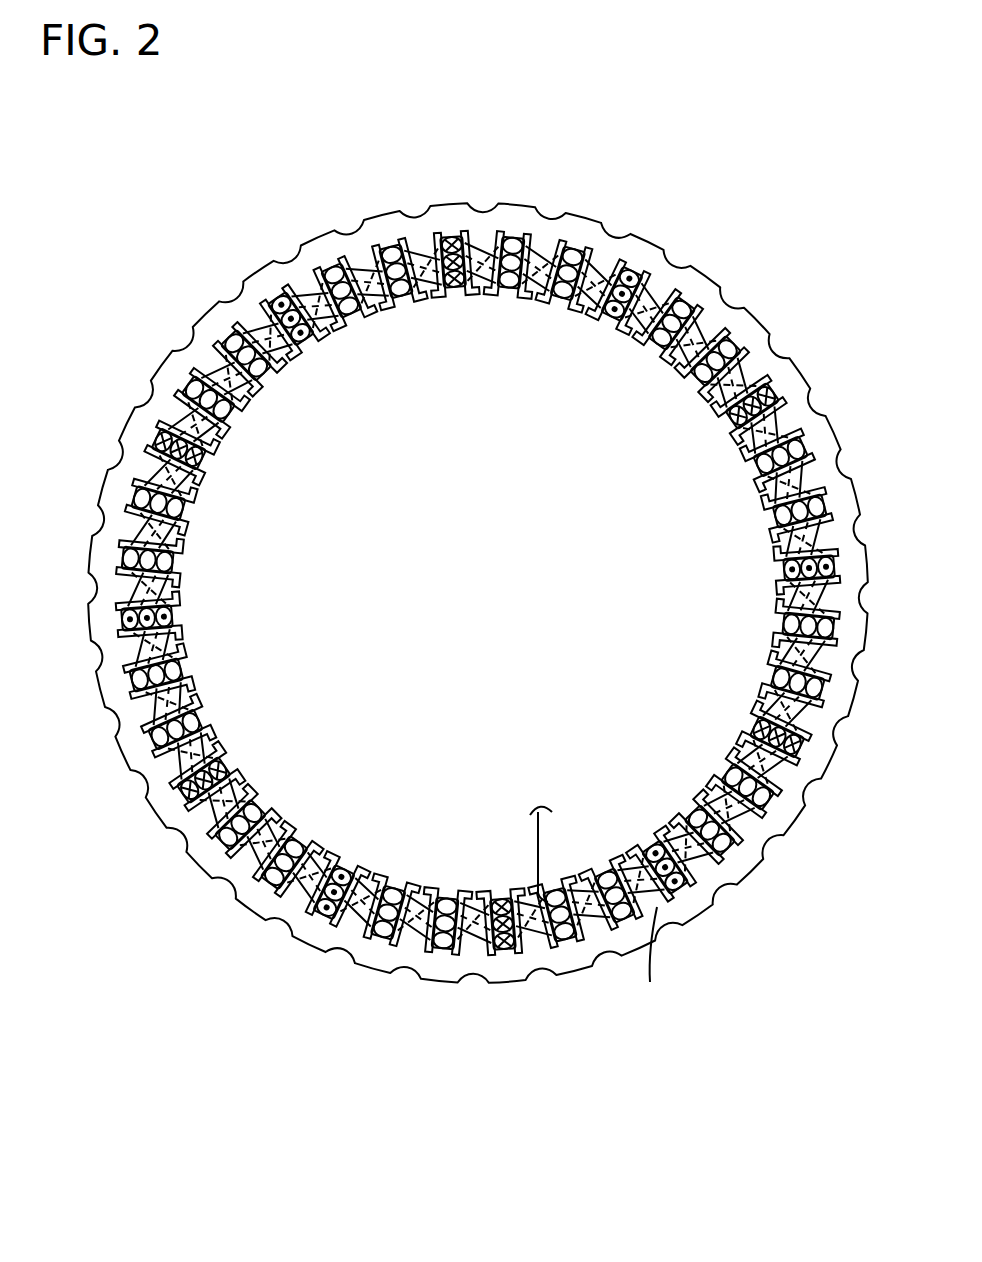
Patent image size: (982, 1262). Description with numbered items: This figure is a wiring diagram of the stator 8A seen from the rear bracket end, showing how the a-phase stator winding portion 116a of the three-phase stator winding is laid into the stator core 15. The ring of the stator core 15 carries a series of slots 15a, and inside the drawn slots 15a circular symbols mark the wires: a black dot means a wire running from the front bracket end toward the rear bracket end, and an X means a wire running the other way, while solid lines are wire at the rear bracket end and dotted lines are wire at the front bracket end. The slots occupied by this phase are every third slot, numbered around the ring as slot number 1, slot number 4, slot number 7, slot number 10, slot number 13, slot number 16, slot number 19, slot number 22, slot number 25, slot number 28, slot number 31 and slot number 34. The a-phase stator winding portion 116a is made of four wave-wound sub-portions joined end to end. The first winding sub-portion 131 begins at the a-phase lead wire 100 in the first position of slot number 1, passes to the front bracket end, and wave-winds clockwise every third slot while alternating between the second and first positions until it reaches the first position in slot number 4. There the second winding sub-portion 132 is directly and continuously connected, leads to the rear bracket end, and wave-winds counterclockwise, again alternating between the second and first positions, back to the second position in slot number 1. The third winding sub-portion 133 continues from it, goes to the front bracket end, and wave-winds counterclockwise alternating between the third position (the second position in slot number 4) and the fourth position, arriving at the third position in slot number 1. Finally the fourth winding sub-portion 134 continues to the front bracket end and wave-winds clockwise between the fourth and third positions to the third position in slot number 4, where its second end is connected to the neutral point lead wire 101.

The stator 8A is at (211, 186).
The stator core 15 is at (652, 252).
The slots 15a is at (130, 490).
The a-phase stator winding portion 116a is at (182, 533).
The slot number 1 is at (491, 911).
The slot number 4 is at (654, 869).
The slot number 7 is at (770, 747).
The slot number 10 is at (791, 580).
The slot number 13 is at (749, 416).
The slot number 16 is at (631, 309).
The slot number 19 is at (465, 283).
The slot number 22 is at (301, 325).
The slot number 25 is at (195, 439).
The slot number 28 is at (166, 606).
The slot number 31 is at (211, 769).
The slot number 34 is at (326, 881).
The a-phase lead wire 100 is at (537, 824).
The neutral point lead wire 101 is at (652, 955).
The first winding sub-portion 131 is at (777, 693).
The second winding sub-portion 132 is at (750, 755).
The third winding sub-portion 133 is at (590, 908).
The fourth winding sub-portion 134 is at (823, 597).